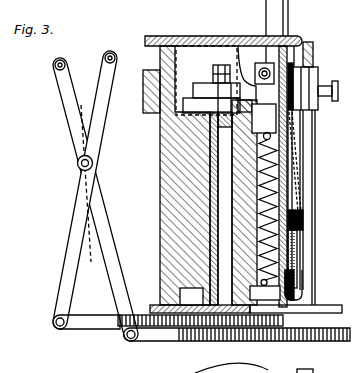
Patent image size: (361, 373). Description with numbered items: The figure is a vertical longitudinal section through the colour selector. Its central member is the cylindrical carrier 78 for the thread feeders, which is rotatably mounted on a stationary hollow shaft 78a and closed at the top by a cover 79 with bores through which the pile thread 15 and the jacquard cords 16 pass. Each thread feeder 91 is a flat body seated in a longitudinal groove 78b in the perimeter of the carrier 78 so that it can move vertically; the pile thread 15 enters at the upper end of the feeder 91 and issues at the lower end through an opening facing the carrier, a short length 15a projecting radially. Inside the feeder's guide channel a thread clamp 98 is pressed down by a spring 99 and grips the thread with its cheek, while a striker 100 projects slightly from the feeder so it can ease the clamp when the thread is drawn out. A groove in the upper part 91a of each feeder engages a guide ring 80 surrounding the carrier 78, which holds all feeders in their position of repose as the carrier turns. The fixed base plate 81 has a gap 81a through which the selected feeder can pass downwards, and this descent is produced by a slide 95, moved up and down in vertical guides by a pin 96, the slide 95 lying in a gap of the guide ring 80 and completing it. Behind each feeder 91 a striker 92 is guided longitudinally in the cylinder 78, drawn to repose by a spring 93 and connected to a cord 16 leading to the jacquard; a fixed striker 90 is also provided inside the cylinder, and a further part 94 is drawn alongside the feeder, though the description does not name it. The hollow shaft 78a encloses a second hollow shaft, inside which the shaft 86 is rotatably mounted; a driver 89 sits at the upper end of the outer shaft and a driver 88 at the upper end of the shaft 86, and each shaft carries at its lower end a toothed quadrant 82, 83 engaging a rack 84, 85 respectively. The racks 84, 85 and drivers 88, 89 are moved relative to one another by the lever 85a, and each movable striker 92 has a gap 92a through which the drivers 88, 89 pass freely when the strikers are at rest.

The pile thread 15 is at (289, 23).
The short length of pile thread 15a is at (265, 292).
The cord 16 is at (266, 14).
The cylindrical carrier 78 is at (171, 209).
The hollow shaft 78a is at (214, 181).
The longitudinal grooves 78b is at (280, 349).
The cover 79 is at (176, 37).
The guide ring 80 is at (148, 92).
The fixed base plate 81 is at (161, 308).
The gap 81a is at (325, 308).
The toothed quadrant 82 is at (200, 327).
The toothed quadrant 83 is at (234, 336).
The rack 84 is at (243, 108).
The rack 85 is at (120, 326).
The lever 85a is at (68, 273).
The shaft 86 is at (225, 208).
The driver 88 is at (216, 81).
The driver 89 is at (211, 105).
The fixed striker 90 is at (183, 60).
The thread feeder 91 is at (294, 161).
The upper part of the feeder 91a is at (301, 124).
The striker 92 is at (256, 67).
The gap 92a is at (246, 44).
The spring 93 is at (264, 195).
The rod 94 is at (310, 193).
The slide 95 is at (311, 80).
The pin 96 is at (328, 93).
The thread clamp 98 is at (297, 283).
The spring 99 is at (306, 248).
The striker 100 is at (304, 219).